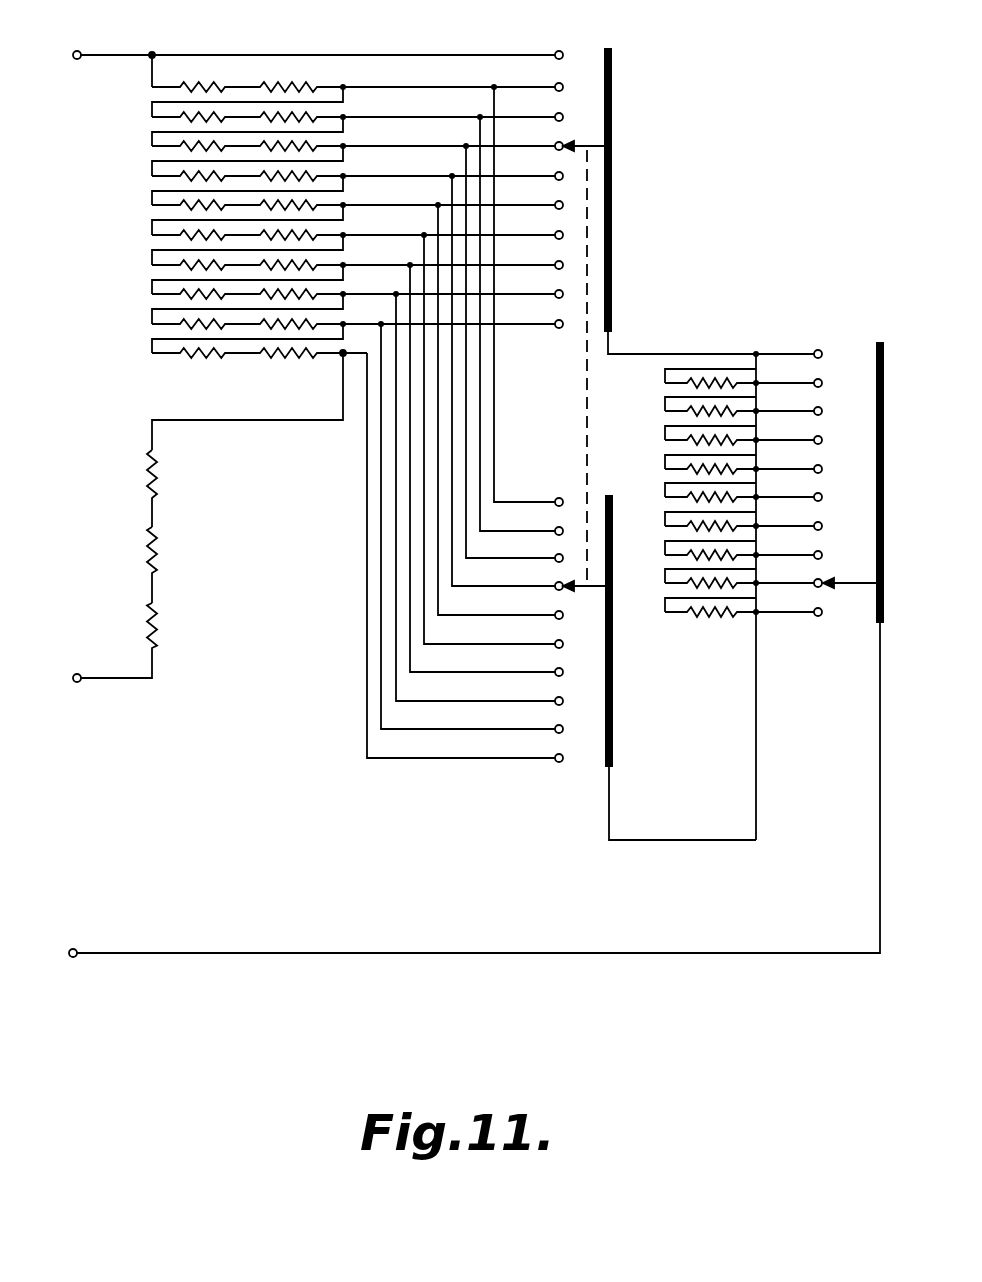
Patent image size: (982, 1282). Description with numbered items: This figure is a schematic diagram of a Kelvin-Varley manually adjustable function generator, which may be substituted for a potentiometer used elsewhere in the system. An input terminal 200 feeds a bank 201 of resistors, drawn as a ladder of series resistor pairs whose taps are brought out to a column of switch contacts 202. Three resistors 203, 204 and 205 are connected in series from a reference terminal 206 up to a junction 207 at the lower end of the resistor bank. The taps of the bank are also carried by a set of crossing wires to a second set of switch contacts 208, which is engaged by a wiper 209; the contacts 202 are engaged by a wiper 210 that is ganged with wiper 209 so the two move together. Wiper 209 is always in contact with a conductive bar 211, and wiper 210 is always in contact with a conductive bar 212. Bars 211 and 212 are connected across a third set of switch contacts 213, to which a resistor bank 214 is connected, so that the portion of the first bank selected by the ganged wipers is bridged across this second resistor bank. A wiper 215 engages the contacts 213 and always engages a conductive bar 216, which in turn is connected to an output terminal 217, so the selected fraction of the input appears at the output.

The input terminal 200 is at (77, 51).
The bank of resistors 201 is at (121, 214).
The switch contacts 202 is at (562, 50).
The resistor 203 is at (156, 632).
The resistor 204 is at (156, 540).
The resistor 205 is at (156, 462).
The reference terminal 206 is at (77, 684).
The junction 207 is at (340, 359).
The switch contacts 208 is at (567, 766).
The wiper 209 is at (592, 590).
The wiper 210 is at (590, 146).
The conductive bar 211 is at (613, 736).
The conductive bar 212 is at (613, 240).
The switch contacts 213 is at (820, 342).
The resistor bank 214 is at (658, 437).
The wiper 215 is at (862, 587).
The conductive bar 216 is at (880, 627).
The output terminal 217 is at (76, 948).